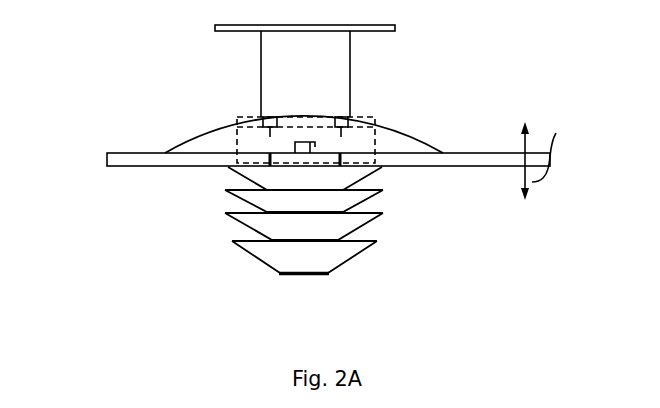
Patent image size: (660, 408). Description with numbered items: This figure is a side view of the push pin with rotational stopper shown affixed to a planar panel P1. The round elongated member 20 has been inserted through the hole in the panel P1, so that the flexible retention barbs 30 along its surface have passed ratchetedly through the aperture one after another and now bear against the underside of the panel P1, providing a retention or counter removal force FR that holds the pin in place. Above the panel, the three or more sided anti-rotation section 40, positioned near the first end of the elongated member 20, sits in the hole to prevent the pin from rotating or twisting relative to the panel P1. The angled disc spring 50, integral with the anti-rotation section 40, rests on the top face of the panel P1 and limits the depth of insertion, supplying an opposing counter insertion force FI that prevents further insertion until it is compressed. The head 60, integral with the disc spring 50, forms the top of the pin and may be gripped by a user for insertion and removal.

The elongated member 20 is at (315, 276).
The retention barbs 30 is at (352, 248).
The three or more sided anti-rotation section 40 is at (250, 138).
The disc spring 50 is at (401, 130).
The head 60 is at (365, 59).
The plate P1 is at (136, 160).
The counter insertion force FI is at (527, 143).
The counter removal force FR is at (527, 182).